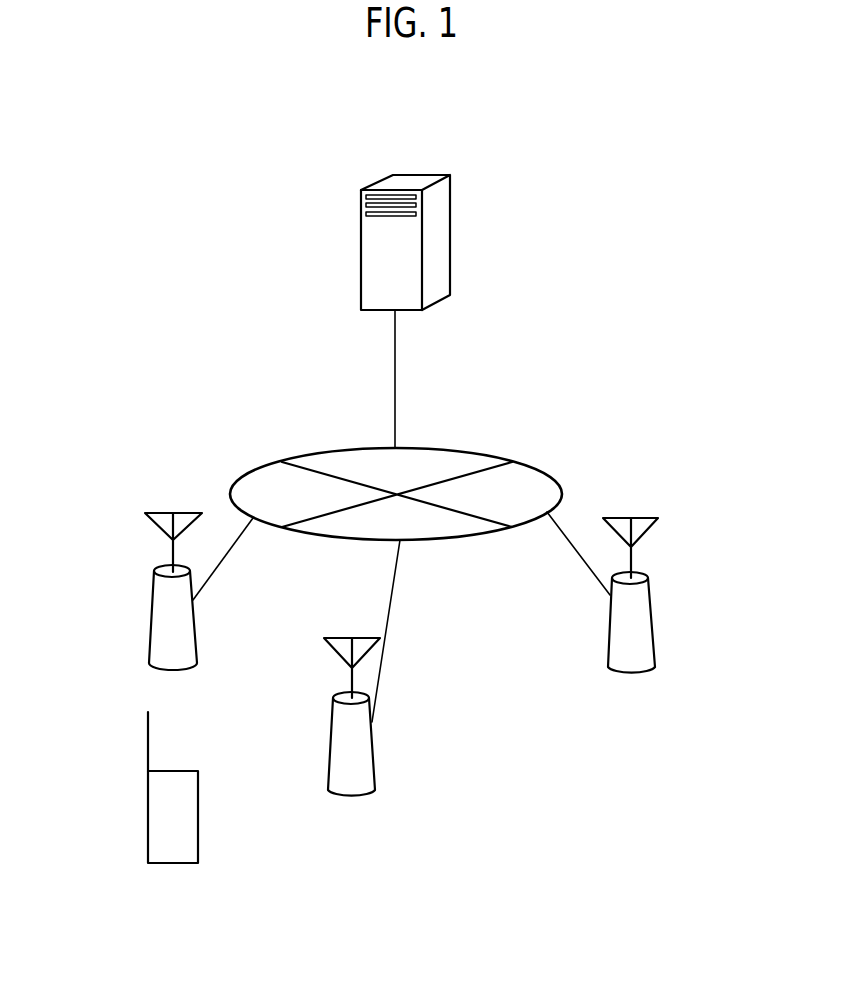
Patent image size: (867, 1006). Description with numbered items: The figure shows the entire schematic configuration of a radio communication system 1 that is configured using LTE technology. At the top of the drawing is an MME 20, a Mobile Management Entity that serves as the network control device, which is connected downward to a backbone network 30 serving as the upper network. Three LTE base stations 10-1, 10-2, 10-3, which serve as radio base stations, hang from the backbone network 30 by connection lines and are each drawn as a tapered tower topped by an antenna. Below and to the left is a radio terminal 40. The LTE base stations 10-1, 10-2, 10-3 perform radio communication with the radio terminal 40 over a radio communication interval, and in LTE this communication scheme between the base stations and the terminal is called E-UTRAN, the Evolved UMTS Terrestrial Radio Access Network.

The radio communication system 1 is at (690, 128).
The MME 20 is at (414, 175).
The backbone network 30 is at (247, 472).
The LTE base station 10-1 is at (152, 607).
The LTE base station 10-2 is at (375, 745).
The LTE base station 10-3 is at (653, 612).
The radio terminal 40 is at (148, 810).